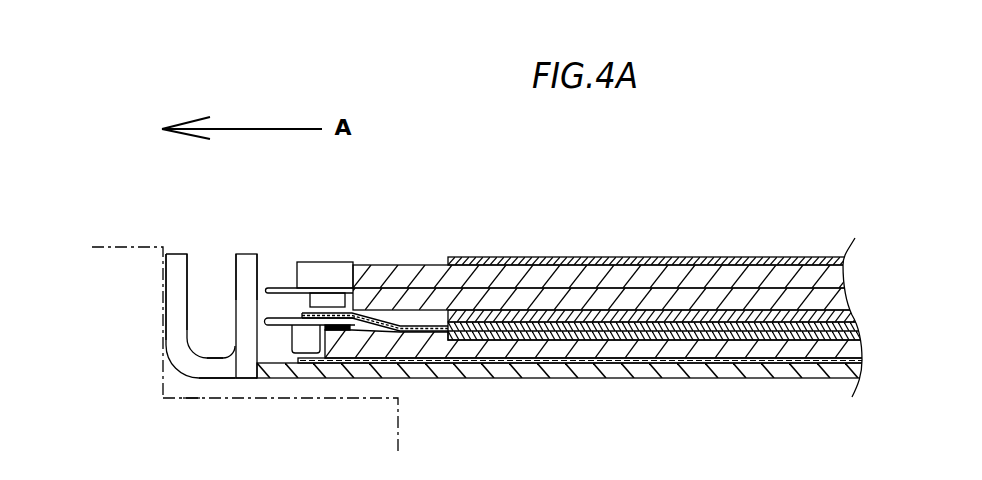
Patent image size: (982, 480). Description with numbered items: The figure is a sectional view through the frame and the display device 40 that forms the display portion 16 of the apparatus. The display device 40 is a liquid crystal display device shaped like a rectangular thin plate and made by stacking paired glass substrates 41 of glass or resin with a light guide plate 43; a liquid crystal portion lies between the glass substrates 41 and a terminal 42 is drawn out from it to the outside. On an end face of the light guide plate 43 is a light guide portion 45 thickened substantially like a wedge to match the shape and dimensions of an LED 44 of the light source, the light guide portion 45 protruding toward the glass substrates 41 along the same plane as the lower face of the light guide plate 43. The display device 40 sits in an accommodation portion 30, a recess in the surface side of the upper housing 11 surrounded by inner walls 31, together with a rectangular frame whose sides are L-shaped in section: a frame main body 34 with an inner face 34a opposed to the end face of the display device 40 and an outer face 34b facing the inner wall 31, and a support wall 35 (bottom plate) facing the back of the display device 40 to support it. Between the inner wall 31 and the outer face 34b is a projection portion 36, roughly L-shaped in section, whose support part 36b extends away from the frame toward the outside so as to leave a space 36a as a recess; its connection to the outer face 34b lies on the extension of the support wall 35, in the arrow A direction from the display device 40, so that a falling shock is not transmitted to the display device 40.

The upper housing 11 is at (135, 247).
The display portion 16 is at (713, 208).
The accommodation portion 30 is at (240, 387).
The inner wall 31 is at (183, 400).
The frame main body 34 is at (248, 254).
The inner face 34a is at (257, 270).
The outer face 34b is at (235, 265).
The support wall (bottom plate) 35 is at (712, 372).
The projection portion 36 is at (172, 362).
The space 36a is at (203, 288).
The support part 36b is at (213, 372).
The display device 40 is at (603, 257).
The glass substrates 41 is at (492, 297).
The terminal 42 is at (296, 260).
The light guide plate 43 is at (850, 347).
The LED 44 is at (305, 347).
The light guide portion 45 is at (392, 320).